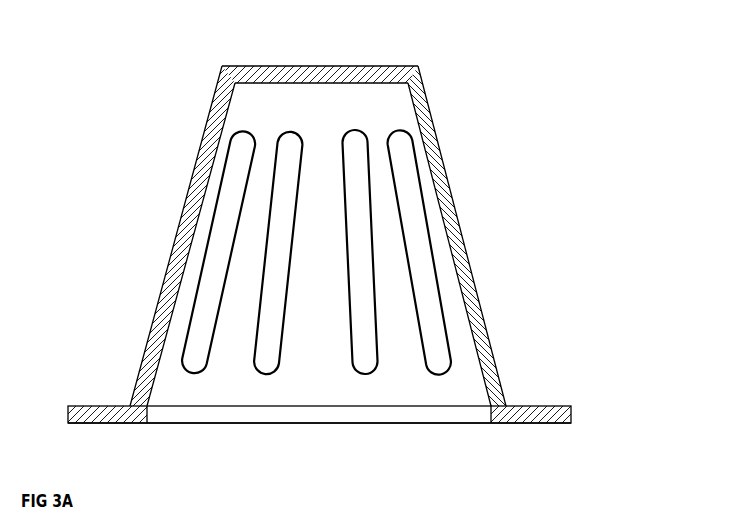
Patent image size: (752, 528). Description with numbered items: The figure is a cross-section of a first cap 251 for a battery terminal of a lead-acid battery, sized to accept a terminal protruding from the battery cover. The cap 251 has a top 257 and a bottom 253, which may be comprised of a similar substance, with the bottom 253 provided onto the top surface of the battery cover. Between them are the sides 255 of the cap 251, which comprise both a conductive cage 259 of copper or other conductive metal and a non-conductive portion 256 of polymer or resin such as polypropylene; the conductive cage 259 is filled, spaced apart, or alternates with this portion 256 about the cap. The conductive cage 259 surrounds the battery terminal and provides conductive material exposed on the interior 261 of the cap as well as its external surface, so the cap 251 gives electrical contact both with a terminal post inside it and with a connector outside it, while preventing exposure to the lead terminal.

The cap 251 is at (622, 63).
The bottom 253 is at (574, 400).
The sides 255 is at (468, 257).
The portion 256 is at (332, 258).
The top 257 is at (401, 65).
The conductive cage 259 is at (342, 172).
The interior 261 is at (372, 429).